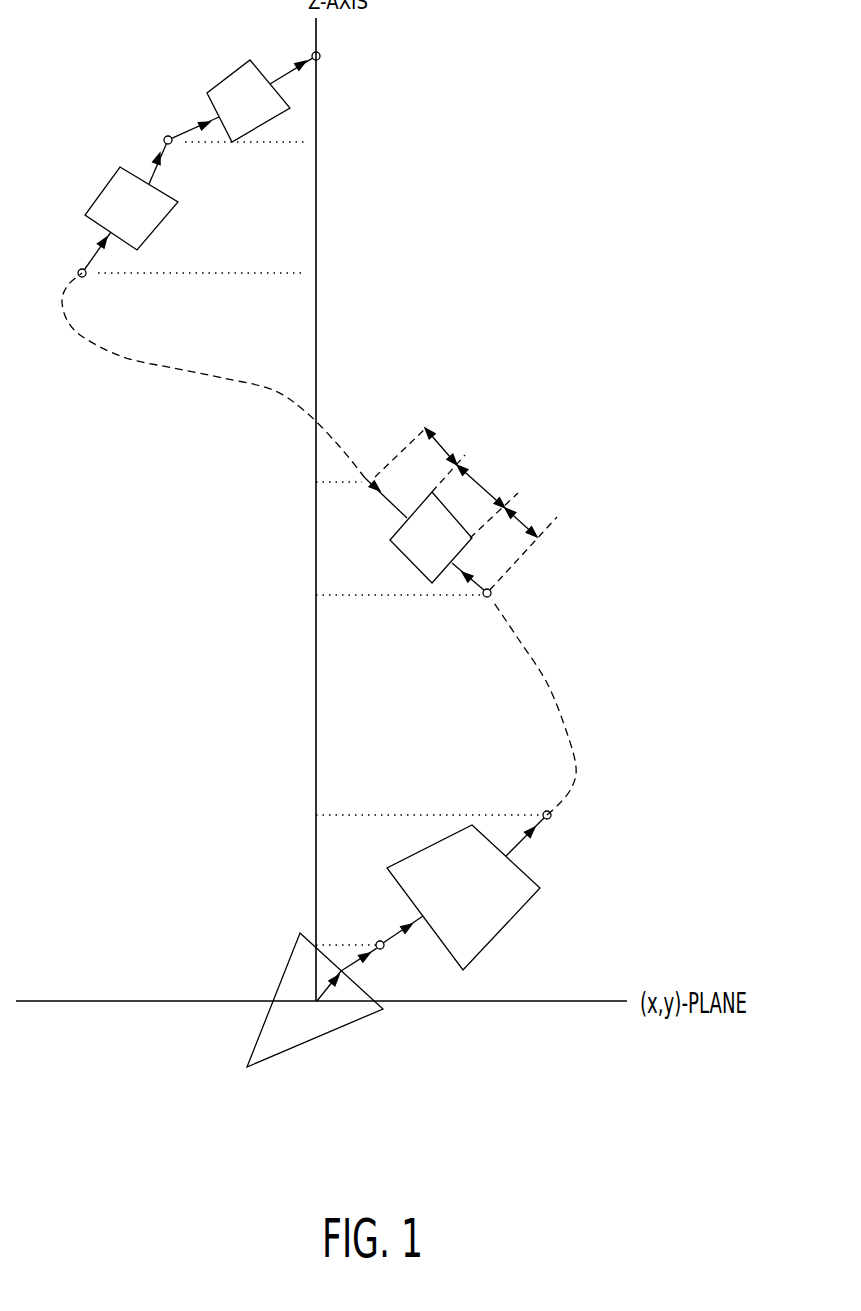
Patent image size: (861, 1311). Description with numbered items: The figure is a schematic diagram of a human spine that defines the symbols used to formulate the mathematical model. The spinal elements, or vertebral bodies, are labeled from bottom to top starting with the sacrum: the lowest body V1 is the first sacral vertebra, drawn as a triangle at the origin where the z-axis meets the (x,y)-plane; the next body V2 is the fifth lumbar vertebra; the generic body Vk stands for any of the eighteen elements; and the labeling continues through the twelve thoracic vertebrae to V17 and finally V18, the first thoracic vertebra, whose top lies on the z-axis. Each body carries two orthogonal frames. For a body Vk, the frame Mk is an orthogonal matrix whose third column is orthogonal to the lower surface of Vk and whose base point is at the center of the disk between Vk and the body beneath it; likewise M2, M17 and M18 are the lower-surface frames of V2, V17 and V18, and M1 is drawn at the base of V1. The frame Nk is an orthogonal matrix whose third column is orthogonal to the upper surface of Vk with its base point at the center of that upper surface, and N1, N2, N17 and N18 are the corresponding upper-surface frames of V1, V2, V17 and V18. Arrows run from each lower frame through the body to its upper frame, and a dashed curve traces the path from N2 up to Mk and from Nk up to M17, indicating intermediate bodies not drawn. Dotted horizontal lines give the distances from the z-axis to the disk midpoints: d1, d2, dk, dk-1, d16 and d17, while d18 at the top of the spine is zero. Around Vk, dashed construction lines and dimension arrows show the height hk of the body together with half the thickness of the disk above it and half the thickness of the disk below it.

The vertebral body (first sacral vertebra) V1 is at (315, 1000).
The vertebral body (fifth lumbar vertebra) V2 is at (463, 897).
The k-th vertebral body Vk is at (431, 537).
The vertebral body (seventeenth element) V17 is at (131, 208).
The vertebral body (first thoracic vertebra) V18 is at (231, 101).
The orthogonal frame at lower surface of V1 M1 is at (336, 1000).
The orthogonal frame at lower surface of V2 M2 is at (411, 940).
The orthogonal frame at lower surface of Vk Mk is at (471, 591).
The orthogonal frame at lower surface of V17 M17 is at (102, 269).
The orthogonal frame at lower surface of V18 M18 is at (179, 160).
The orthogonal frame at upper surface of V1 N1 is at (369, 966).
The orthogonal frame at upper surface of V2 N2 is at (537, 835).
The orthogonal frame at upper surface of Vk Nk is at (386, 503).
The orthogonal frame at upper surface of V17 N17 is at (201, 212).
The orthogonal frame at upper surface of V18 N18 is at (291, 61).
The distance from z-axis at level of V1 d1 is at (346, 929).
The distance from z-axis at level of V2 d2 is at (429, 796).
The distance from z-axis to disk midpoint for Vk dk is at (348, 461).
The distance from z-axis to disk midpoint for Vk-1 dk-1 is at (399, 618).
The distance from z-axis at level of sixteenth disk d16 is at (201, 293).
The distance from z-axis at level of seventeenth disk d17 is at (245, 160).
The distance from z-axis at level of V18 d18 is at (364, 61).
The height of Vk hk is at (487, 495).